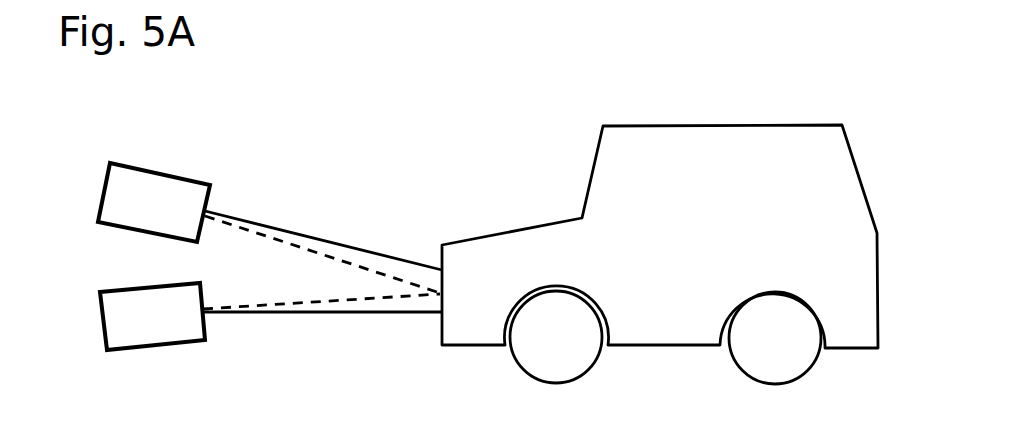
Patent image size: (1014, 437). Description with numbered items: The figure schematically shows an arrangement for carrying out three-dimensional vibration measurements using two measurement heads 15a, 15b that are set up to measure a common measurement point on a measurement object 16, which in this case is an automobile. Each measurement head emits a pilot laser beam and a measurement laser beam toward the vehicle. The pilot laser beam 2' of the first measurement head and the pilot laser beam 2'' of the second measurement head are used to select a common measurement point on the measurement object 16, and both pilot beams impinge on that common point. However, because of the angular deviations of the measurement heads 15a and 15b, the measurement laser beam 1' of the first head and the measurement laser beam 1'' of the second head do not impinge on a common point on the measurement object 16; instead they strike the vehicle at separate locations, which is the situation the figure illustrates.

The measurement object 16 is at (877, 198).
The first measurement head 15a is at (98, 188).
The second measurement head 15b is at (98, 326).
The measurement laser beam of the first measurement head 1' is at (323, 226).
The pilot laser beam of the first measurement head 2' is at (322, 237).
The measurement laser beam of the second measurement head 1'' is at (322, 349).
The pilot laser beam of the second measurement head 2'' is at (321, 340).